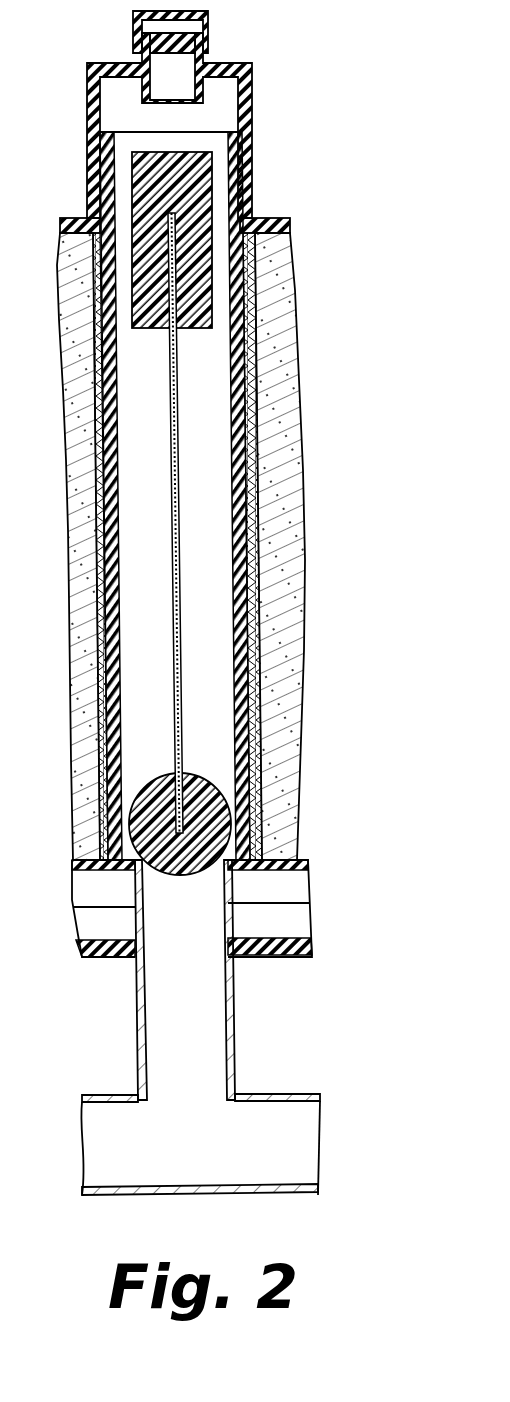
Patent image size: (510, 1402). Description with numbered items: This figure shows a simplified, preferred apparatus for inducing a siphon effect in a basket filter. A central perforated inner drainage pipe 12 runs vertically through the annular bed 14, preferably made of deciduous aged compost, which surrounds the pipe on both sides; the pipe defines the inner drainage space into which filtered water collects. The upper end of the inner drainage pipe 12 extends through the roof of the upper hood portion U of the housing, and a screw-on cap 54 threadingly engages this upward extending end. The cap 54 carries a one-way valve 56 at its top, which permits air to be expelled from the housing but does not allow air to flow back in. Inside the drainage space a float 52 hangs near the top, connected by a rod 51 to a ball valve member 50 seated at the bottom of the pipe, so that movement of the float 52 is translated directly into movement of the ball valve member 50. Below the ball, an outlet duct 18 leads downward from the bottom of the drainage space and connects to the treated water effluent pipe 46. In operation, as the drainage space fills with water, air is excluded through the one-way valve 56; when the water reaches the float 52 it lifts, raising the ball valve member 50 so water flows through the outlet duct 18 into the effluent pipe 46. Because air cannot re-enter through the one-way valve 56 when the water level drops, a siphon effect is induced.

The inner drainage pipe 12 is at (231, 466).
The bed 14 is at (286, 521).
The outlet duct 18 is at (234, 1011).
The treated water effluent pipe 46 is at (300, 1094).
The ball valve member 50 is at (170, 772).
The rod 51 is at (178, 503).
The float 52 is at (193, 181).
The screw-on cap 54 is at (252, 115).
The one-way valve 56 is at (278, 45).
The upper hood portion U is at (290, 218).